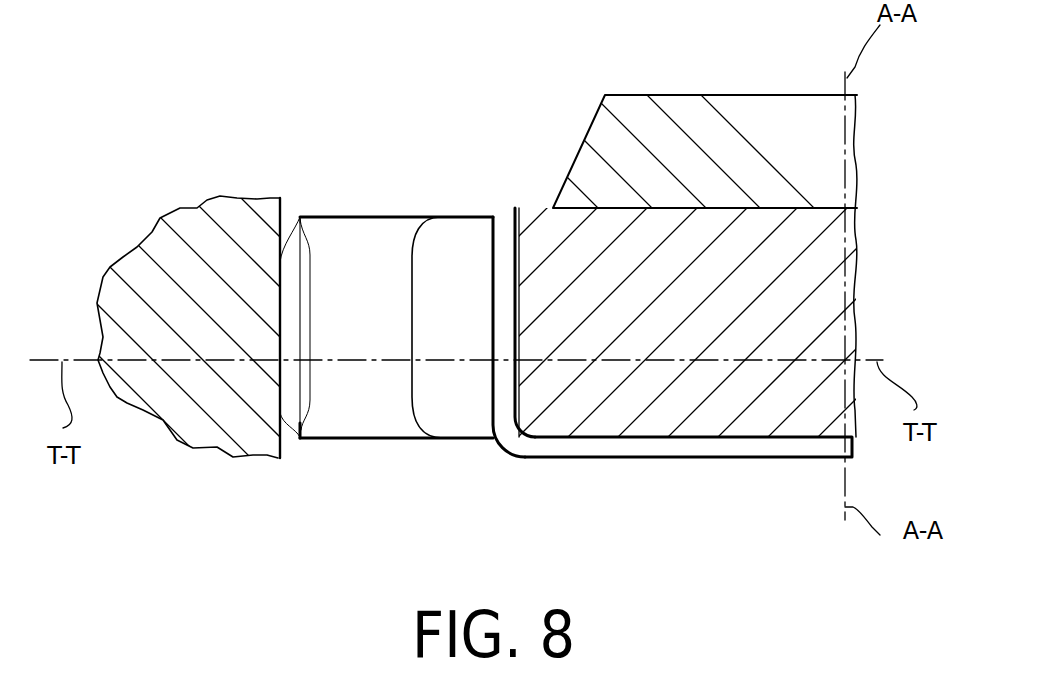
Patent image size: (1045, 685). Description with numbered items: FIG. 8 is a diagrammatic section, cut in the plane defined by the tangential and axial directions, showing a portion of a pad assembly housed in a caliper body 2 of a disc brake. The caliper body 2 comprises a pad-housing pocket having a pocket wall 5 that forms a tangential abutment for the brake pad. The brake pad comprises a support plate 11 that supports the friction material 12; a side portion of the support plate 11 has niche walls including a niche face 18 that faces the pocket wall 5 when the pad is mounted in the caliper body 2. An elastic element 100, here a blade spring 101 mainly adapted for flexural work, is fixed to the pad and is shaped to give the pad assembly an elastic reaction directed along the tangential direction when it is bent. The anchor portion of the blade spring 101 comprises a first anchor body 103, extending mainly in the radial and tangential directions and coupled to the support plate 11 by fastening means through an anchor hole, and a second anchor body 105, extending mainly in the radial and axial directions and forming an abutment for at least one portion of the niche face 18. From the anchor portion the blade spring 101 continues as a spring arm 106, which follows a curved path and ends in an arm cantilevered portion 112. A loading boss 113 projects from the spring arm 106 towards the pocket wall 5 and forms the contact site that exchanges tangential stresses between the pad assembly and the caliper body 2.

The caliper body 2 is at (188, 223).
The pocket wall 5 is at (298, 209).
The support plate 11 is at (818, 312).
The friction material 12 is at (663, 115).
The niche face 18 is at (543, 264).
The elastic element 100 is at (408, 165).
The blade spring 101 is at (554, 297).
The first anchor body 103 is at (732, 447).
The second anchor body 105 is at (507, 217).
The spring arm 106 is at (362, 413).
The arm cantilevered portion 112 is at (468, 410).
The loading boss 113 is at (290, 387).